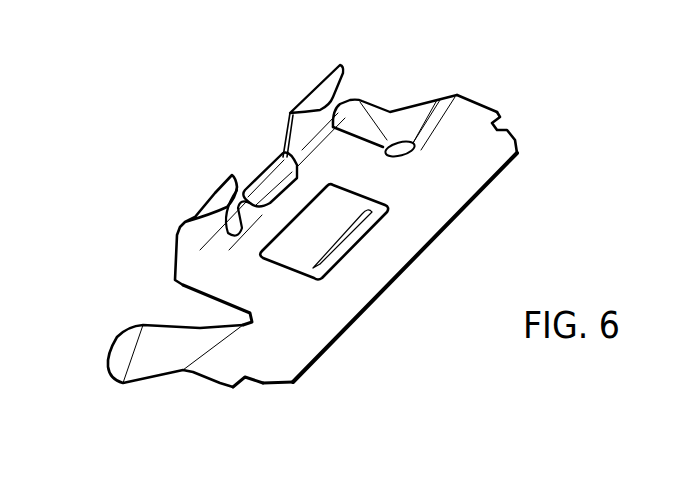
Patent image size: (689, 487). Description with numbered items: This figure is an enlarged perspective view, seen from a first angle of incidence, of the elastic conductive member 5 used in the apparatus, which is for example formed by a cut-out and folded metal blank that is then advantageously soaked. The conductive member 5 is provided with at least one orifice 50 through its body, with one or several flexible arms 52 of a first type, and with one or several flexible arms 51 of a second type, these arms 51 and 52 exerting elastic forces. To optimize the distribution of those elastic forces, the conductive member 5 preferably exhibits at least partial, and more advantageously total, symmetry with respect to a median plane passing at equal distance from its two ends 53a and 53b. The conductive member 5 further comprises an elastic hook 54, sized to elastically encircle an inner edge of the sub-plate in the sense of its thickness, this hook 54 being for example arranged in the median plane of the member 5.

The elastic conductive member 5 is at (535, 120).
The orifice 50 is at (336, 234).
The flexible arm of a second type 51 is at (367, 110).
The flexible arm of a first type 52 is at (323, 92).
The end 53a is at (223, 387).
The end 53b is at (480, 103).
The elastic hook 54 is at (270, 178).